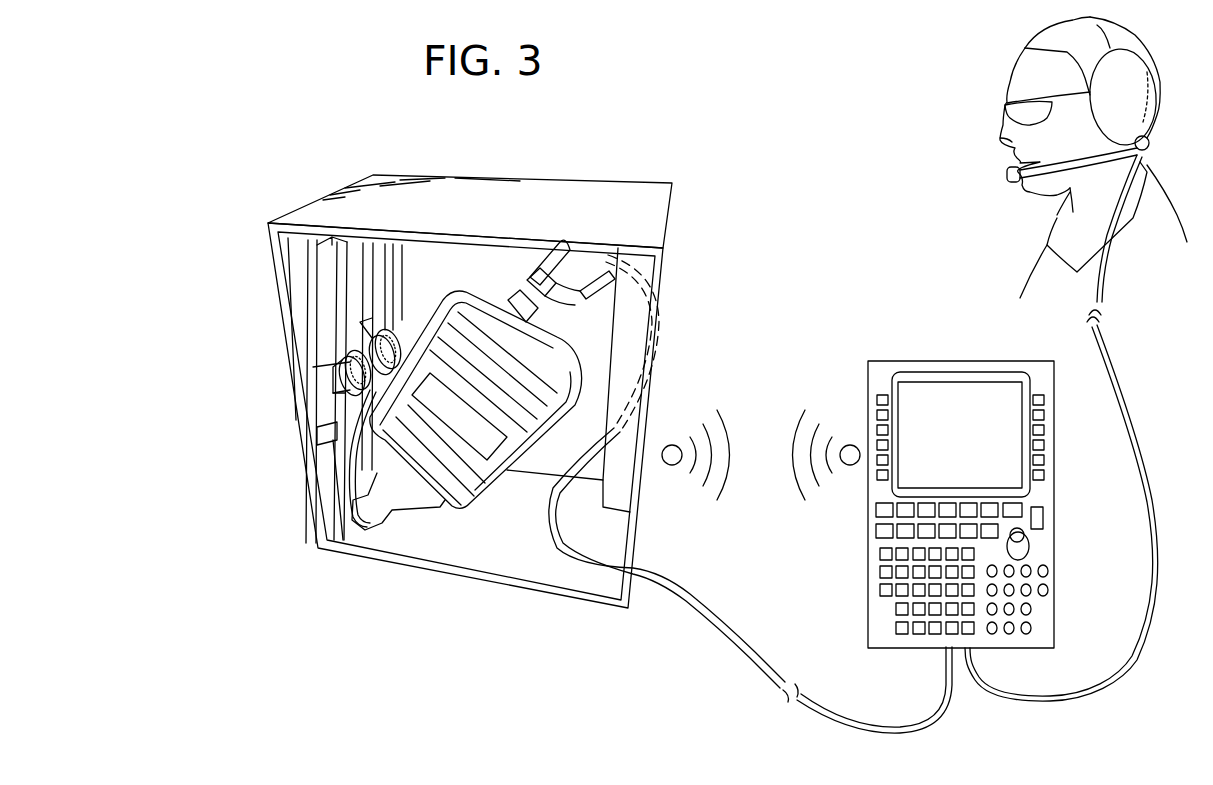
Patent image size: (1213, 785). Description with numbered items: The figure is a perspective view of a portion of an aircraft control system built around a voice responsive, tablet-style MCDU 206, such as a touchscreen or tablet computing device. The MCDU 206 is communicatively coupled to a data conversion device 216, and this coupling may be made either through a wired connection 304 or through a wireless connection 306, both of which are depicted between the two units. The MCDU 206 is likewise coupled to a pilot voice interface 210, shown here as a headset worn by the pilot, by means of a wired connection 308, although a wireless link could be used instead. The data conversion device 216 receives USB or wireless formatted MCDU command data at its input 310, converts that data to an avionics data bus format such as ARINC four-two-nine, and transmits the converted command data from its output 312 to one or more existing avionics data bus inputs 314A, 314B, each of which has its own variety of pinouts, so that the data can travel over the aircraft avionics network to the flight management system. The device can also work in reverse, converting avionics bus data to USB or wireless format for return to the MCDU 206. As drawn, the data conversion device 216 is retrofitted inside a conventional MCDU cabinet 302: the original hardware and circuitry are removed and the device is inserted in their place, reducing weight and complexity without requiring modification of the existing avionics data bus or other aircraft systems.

The conventional MCDU cabinet 302 is at (558, 180).
The input 310 is at (605, 262).
The existing avionics data bus input 314A is at (372, 340).
The existing avionics data bus input 314B is at (345, 366).
The output 312 is at (363, 523).
The data conversion device 216 is at (490, 497).
The wired connection 304 is at (845, 728).
The wireless connection 306 is at (841, 378).
The voice responsive MCDU 206 is at (946, 360).
The wired connection 308 is at (1103, 685).
The pilot voice interface 210 is at (1007, 175).